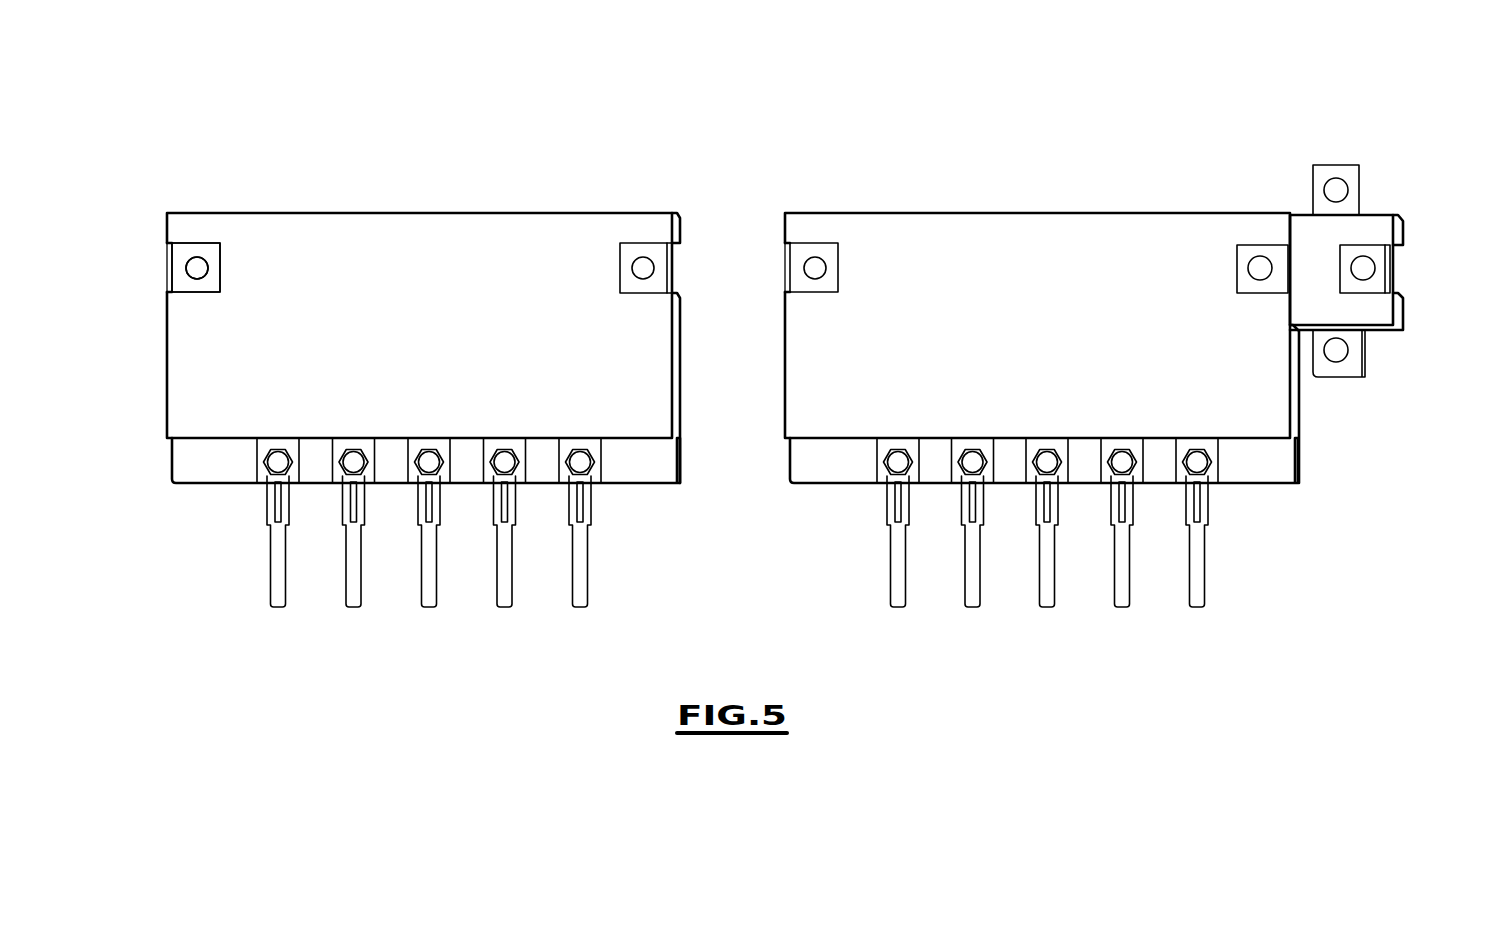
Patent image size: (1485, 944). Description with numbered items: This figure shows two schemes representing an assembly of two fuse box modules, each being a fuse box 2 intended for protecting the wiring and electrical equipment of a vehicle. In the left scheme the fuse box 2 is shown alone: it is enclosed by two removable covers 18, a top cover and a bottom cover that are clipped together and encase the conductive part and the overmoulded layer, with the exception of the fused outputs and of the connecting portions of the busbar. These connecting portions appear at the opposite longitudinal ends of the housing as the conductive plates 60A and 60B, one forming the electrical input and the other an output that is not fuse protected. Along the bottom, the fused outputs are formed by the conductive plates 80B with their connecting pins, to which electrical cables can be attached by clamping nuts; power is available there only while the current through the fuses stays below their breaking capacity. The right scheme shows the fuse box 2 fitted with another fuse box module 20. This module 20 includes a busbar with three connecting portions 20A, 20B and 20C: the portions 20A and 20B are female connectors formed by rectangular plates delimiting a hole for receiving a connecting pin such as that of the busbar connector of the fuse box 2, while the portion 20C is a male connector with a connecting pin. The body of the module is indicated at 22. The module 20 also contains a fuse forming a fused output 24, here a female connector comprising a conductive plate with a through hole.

The fuse box 2 is at (338, 185).
The removable cover 18 is at (728, 325).
The fuse box module 20 is at (1384, 168).
The connecting portion 20A is at (1252, 250).
The connecting portion 20B is at (1323, 175).
The connecting portion 20C is at (1377, 285).
The terminal block 22 is at (1377, 228).
The fused output 24 is at (1348, 363).
The conductive plate 60A is at (183, 280).
The conductive plate 60B is at (627, 250).
The conductive plate 80B is at (295, 447).